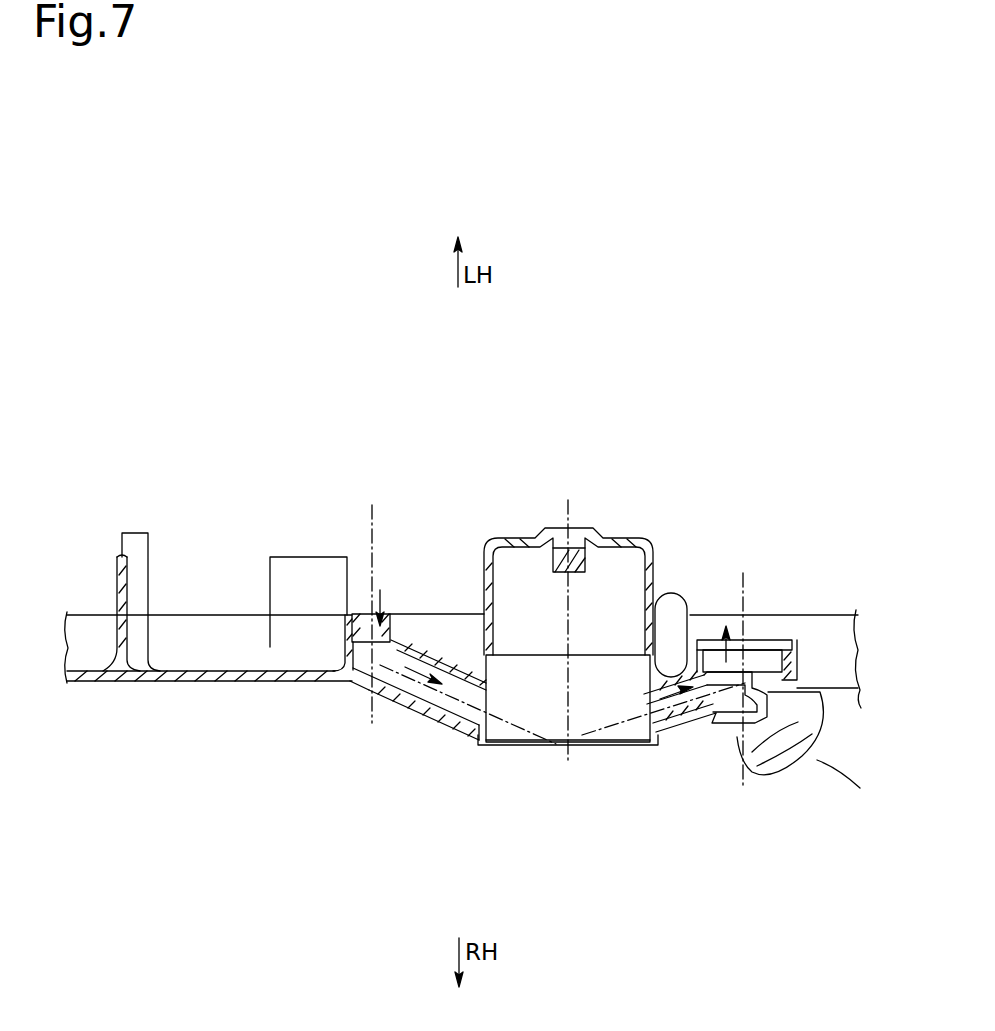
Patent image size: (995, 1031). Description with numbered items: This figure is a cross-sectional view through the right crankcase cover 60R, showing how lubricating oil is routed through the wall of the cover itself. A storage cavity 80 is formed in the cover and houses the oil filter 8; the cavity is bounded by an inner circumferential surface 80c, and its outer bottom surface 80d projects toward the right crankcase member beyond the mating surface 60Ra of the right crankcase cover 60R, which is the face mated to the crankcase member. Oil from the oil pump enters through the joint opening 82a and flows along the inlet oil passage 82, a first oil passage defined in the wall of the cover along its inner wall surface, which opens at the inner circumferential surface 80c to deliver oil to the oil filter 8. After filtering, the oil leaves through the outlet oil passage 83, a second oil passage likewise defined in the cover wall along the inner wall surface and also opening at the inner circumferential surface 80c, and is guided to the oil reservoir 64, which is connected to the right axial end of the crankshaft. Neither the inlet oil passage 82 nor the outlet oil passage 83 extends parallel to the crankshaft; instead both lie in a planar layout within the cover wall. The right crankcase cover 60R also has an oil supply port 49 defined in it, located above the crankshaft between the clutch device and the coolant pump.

The right crankcase cover 60R is at (258, 685).
The mating surface 60Ra is at (230, 613).
The joint opening 82a is at (360, 612).
The inlet oil passage 82 is at (455, 713).
The storage cavity 80 is at (660, 548).
The outer bottom surface 80d is at (553, 528).
The inner circumferential surface 80c is at (650, 673).
The oil filter 8 is at (548, 616).
The oil reservoir 64 is at (763, 637).
The outlet oil passage 83 is at (655, 712).
The oil supply port 49 is at (800, 758).